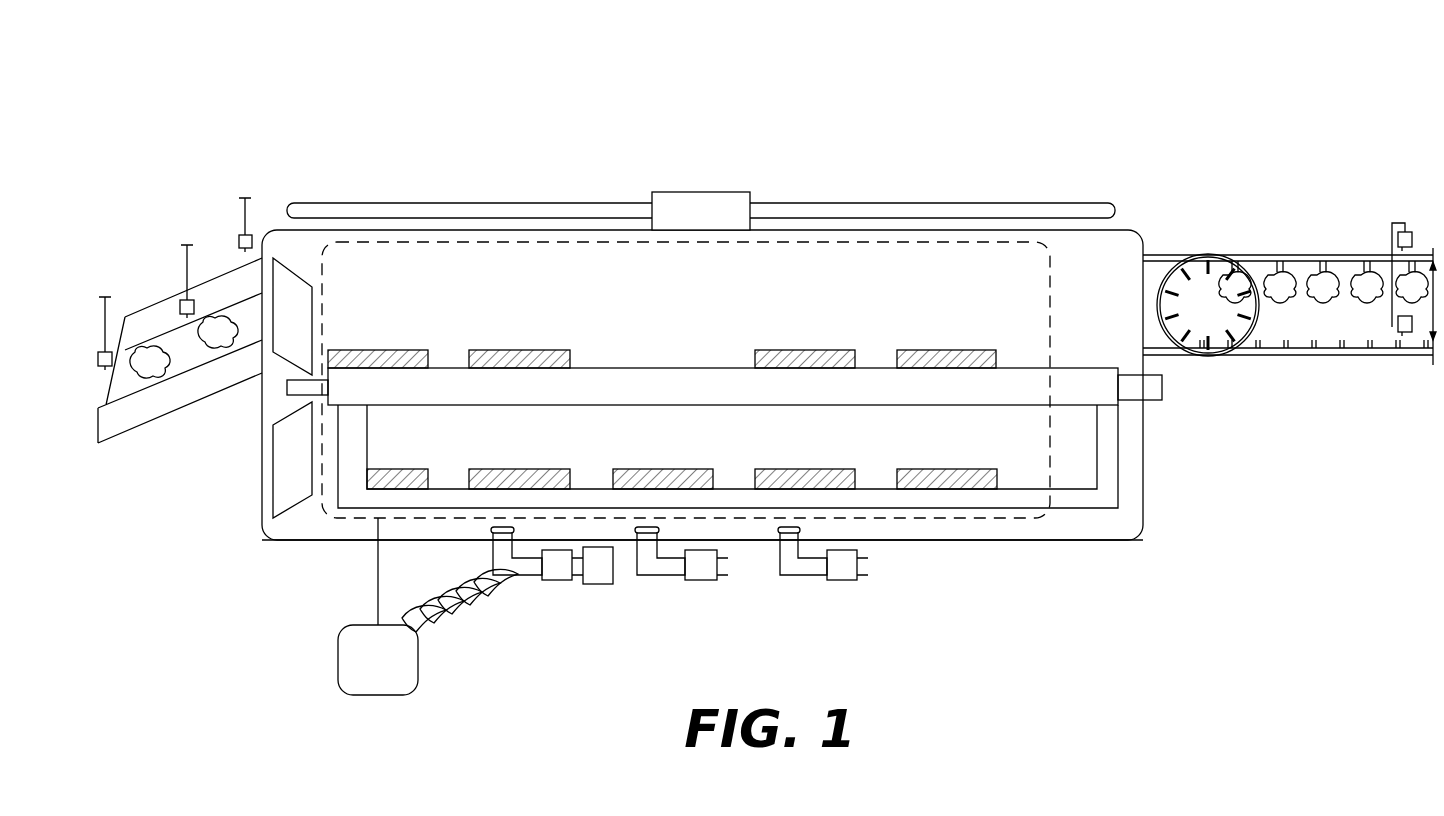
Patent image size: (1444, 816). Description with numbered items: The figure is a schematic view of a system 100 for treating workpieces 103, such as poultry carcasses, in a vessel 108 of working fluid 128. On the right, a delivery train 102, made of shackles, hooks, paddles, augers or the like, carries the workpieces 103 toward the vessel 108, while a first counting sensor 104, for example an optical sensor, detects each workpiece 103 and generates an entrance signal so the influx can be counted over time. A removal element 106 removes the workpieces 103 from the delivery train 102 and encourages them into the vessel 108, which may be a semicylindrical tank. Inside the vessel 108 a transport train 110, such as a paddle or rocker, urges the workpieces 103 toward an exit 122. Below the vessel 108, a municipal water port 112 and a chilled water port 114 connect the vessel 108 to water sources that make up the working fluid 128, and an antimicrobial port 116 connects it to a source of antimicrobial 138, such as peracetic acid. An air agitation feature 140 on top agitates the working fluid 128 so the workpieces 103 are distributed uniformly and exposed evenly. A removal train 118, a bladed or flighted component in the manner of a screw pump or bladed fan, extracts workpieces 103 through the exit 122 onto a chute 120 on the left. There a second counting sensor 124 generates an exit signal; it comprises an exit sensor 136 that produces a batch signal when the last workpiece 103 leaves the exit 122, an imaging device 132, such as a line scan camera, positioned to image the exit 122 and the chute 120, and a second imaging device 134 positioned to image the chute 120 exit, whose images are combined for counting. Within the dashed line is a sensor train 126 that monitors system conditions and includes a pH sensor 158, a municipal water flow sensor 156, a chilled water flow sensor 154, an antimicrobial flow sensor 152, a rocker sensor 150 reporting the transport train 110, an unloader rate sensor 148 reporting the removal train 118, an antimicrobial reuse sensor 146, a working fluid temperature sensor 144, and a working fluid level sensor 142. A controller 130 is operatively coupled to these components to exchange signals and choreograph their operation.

The system 100 is at (915, 85).
The delivery train 102 is at (1355, 350).
The workpiece 103 is at (226, 352).
The first counting sensor 104 is at (1393, 238).
The removal element 106 is at (1248, 345).
The vessel 108 is at (1020, 541).
The transport train 110 is at (1112, 488).
The municipal water port 112 is at (800, 577).
The chilled water port 114 is at (660, 577).
The antimicrobial port 116 is at (515, 577).
The removal train 118 is at (290, 500).
The chute 120 is at (150, 416).
The exit 122 is at (252, 308).
The second counting sensor 124 is at (218, 182).
The sensor train 126 is at (528, 242).
The working fluid 128 is at (1010, 248).
The controller 130 is at (428, 606).
The imaging device 132 is at (240, 240).
The second imaging device 134 is at (98, 360).
The exit sensor 136 is at (181, 304).
The source of antimicrobial 138 is at (598, 585).
The air agitation feature 140 is at (703, 190).
The working fluid level sensor 142 is at (951, 350).
The working fluid temperature sensor 144 is at (811, 350).
The antimicrobial reuse sensor 146 is at (525, 350).
The unloader rate sensor 148 is at (385, 350).
The rocker sensor 150 is at (401, 469).
The antimicrobial flow sensor 152 is at (526, 469).
The chilled water flow sensor 154 is at (671, 469).
The municipal water flow sensor 156 is at (811, 469).
The pH sensor 158 is at (956, 469).